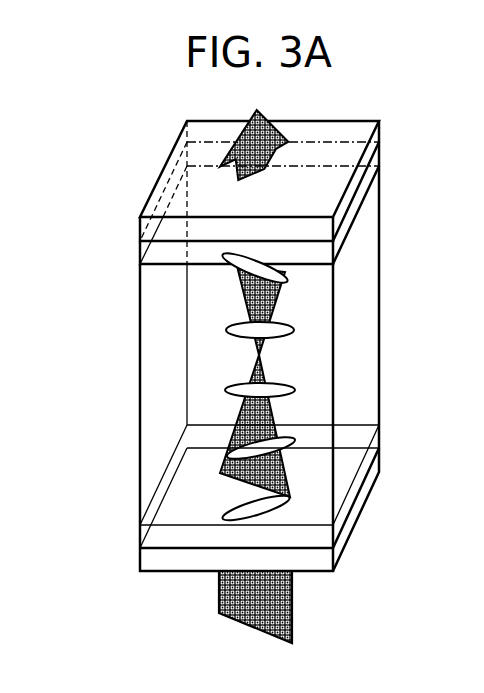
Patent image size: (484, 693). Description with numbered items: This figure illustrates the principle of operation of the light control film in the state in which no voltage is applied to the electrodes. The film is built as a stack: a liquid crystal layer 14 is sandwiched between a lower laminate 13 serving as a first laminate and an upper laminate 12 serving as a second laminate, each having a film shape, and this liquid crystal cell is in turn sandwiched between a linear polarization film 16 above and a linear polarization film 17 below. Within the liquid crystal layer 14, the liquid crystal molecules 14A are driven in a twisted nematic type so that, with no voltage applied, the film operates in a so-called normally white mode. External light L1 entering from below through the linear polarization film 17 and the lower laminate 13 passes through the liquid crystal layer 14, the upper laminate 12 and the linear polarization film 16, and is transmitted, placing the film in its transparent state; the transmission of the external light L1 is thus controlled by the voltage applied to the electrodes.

The linear polarization film 16 is at (378, 135).
The upper laminate 12 is at (377, 162).
The liquid crystal layer 14 is at (198, 345).
The liquid crystal molecules 14A is at (203, 353).
The lower laminate 13 is at (377, 442).
The linear polarization film 17 is at (377, 468).
The external light L1 is at (284, 605).